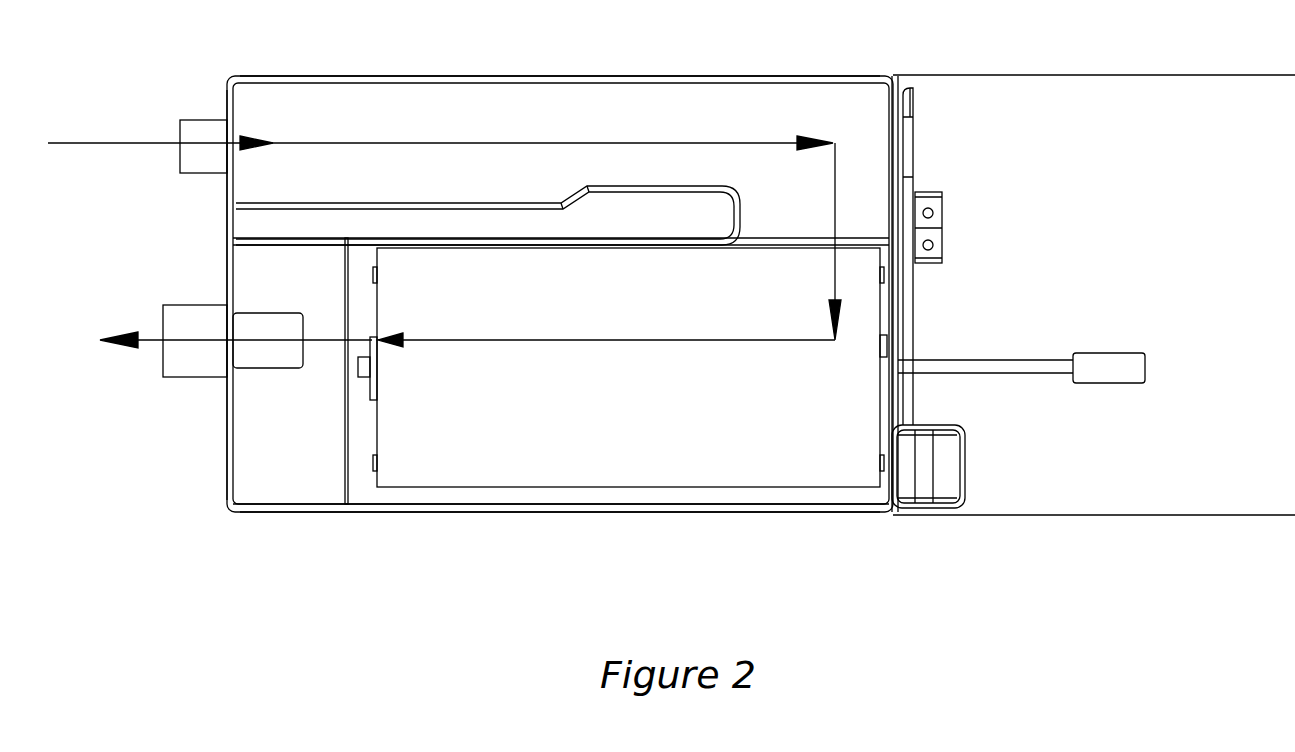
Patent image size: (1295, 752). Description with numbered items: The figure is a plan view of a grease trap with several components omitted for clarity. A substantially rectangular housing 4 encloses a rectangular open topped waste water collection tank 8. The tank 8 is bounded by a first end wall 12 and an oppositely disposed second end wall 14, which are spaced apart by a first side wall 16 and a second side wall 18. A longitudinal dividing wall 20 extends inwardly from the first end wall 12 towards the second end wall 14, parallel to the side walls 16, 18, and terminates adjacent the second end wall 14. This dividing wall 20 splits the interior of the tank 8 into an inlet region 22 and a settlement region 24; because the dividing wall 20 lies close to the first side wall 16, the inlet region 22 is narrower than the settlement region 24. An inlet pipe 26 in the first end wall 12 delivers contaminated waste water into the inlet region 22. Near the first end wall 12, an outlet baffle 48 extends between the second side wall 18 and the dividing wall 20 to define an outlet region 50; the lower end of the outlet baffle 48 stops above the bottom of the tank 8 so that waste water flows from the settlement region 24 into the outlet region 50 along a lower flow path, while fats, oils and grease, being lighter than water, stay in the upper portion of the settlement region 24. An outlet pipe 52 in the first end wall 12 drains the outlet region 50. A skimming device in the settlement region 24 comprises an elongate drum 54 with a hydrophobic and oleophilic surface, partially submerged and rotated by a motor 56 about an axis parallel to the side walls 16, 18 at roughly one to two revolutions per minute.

The housing 4 is at (1087, 75).
The waste water collection tank 8 is at (632, 85).
The first end wall 12 is at (233, 275).
The second end wall 14 is at (898, 195).
The first side wall 16 is at (423, 82).
The second side wall 18 is at (572, 507).
The dividing wall 20 is at (660, 190).
The inlet region 22 is at (532, 134).
The settlement region 24 is at (450, 490).
The inlet pipe 26 is at (182, 165).
The outlet baffle 48 is at (343, 472).
The outlet region 50 is at (270, 428).
The outlet pipe 52 is at (178, 368).
The drum 54 is at (802, 472).
The motor 56 is at (1102, 378).